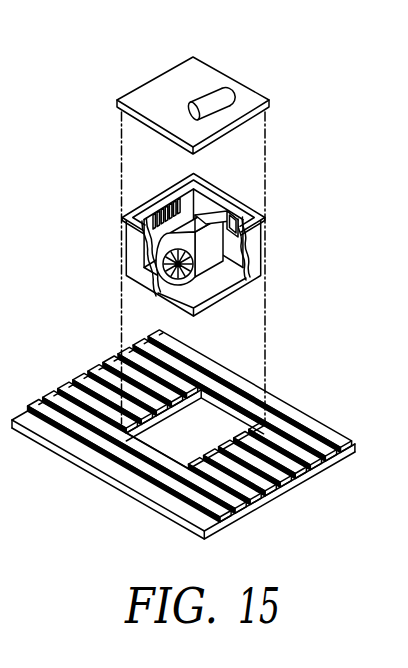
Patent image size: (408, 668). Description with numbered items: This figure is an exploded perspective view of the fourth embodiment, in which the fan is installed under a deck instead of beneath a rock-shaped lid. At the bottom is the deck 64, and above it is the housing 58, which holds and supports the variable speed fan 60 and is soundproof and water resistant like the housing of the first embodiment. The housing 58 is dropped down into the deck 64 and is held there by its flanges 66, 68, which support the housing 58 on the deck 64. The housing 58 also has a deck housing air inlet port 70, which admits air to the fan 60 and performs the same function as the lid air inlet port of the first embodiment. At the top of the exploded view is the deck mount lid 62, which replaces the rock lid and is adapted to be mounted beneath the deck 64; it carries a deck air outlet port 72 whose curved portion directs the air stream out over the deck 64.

The housing 58 is at (262, 243).
The fan 60 is at (217, 259).
The deck mount lid 62 is at (240, 83).
The deck 64 is at (115, 488).
The flange 66 is at (134, 210).
The flange 68 is at (227, 193).
The deck housing air inlet port 70 is at (167, 204).
The deck air outlet port 72 is at (208, 89).